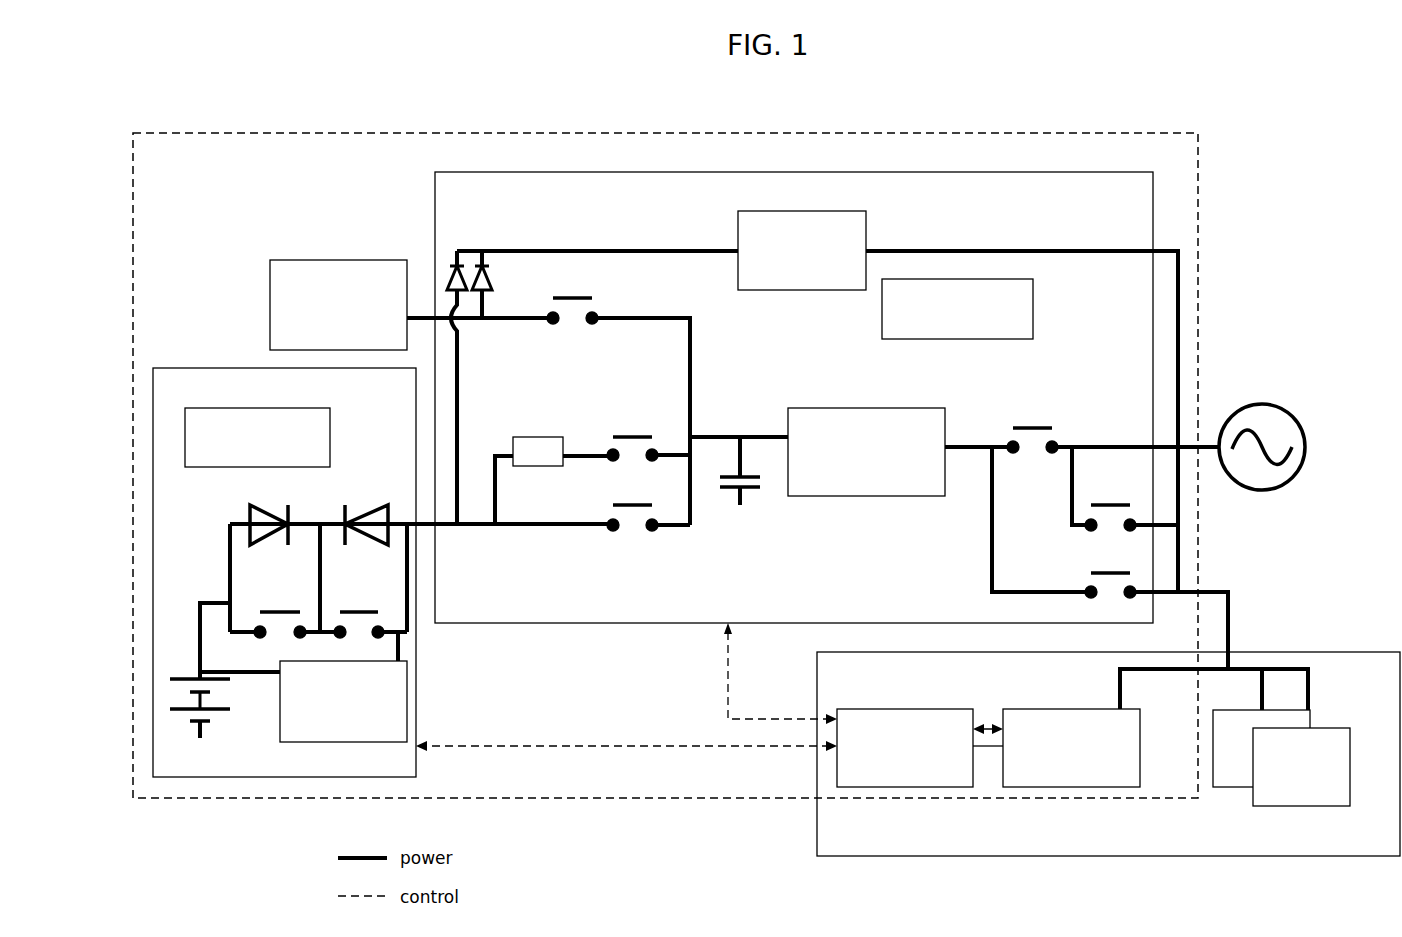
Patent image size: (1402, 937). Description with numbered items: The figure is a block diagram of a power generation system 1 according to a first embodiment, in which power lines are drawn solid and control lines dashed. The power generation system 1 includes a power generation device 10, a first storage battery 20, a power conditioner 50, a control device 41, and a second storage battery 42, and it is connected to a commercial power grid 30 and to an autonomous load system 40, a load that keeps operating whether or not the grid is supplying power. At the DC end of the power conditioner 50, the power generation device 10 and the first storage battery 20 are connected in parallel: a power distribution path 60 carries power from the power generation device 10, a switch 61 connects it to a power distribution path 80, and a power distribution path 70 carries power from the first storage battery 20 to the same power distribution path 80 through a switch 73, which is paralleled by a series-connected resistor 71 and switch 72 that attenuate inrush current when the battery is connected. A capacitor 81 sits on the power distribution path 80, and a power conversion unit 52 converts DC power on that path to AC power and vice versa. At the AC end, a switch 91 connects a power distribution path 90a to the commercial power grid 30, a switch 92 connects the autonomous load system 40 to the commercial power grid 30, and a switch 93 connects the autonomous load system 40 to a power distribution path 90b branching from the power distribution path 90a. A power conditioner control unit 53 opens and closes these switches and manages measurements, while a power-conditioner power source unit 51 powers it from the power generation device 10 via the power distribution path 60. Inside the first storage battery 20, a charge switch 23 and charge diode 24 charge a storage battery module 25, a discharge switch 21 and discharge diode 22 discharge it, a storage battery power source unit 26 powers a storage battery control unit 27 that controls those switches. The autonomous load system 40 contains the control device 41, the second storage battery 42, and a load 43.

The power generation system 1 is at (348, 128).
The power generation device 10 is at (318, 260).
The first storage battery 20 is at (175, 368).
The discharge switch 21 is at (348, 612).
The discharge diode 22 is at (250, 510).
The charge switch 23 is at (268, 612).
The charge diode 24 is at (360, 505).
The storage battery module 25 is at (222, 712).
The storage battery power source unit 26 is at (332, 742).
The storage battery control unit 27 is at (330, 437).
The commercial power grid 30 is at (1292, 418).
The autonomous load system 40 is at (905, 856).
The control device 41 is at (935, 709).
The second storage battery 42 is at (1070, 709).
The load 43 is at (1312, 718).
The power conditioner 50 is at (535, 172).
The power-conditioner power source unit 51 is at (866, 222).
The power conversion unit 52 is at (912, 408).
The power conditioner control unit 53 is at (1033, 298).
The power distribution path 60 is at (505, 318).
The switch 61 is at (578, 298).
The power distribution path 70 is at (475, 530).
The resistor 71 is at (545, 437).
The switch 72 is at (635, 437).
The switch 73 is at (632, 532).
The power distribution path 80 is at (712, 437).
The capacitor 81 is at (753, 490).
The power distribution path 90a is at (962, 447).
The power distribution path 90b is at (1015, 592).
The switch 91 is at (1040, 428).
The switch 92 is at (1110, 505).
The switch 93 is at (1110, 573).